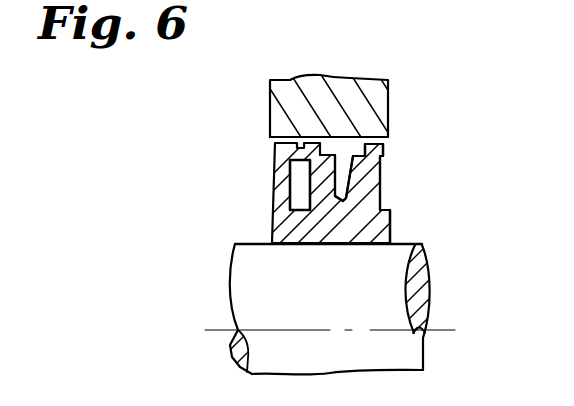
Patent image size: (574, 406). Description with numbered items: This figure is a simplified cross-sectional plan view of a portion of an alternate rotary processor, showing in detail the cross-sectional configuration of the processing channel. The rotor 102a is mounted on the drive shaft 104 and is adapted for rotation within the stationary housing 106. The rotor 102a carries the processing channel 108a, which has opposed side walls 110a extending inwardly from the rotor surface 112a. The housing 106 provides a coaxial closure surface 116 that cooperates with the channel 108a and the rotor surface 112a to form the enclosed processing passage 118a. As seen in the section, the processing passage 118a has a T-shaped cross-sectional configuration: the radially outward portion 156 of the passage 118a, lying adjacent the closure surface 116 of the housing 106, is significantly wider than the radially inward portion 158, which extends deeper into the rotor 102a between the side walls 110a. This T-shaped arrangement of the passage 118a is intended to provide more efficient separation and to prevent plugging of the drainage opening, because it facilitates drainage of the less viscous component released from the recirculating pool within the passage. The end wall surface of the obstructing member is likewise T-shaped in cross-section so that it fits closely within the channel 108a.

The rotor 102a is at (378, 229).
The drive shaft 104 is at (387, 277).
The housing 106 is at (378, 123).
The processing channel 108a is at (327, 229).
The side walls 110a is at (345, 181).
The rotor surface 112a is at (295, 137).
The coaxial closure surface 116 is at (345, 147).
The processing passage 118a is at (340, 170).
The radially outward portion 156 is at (383, 152).
The radially inward portion 158 is at (290, 194).